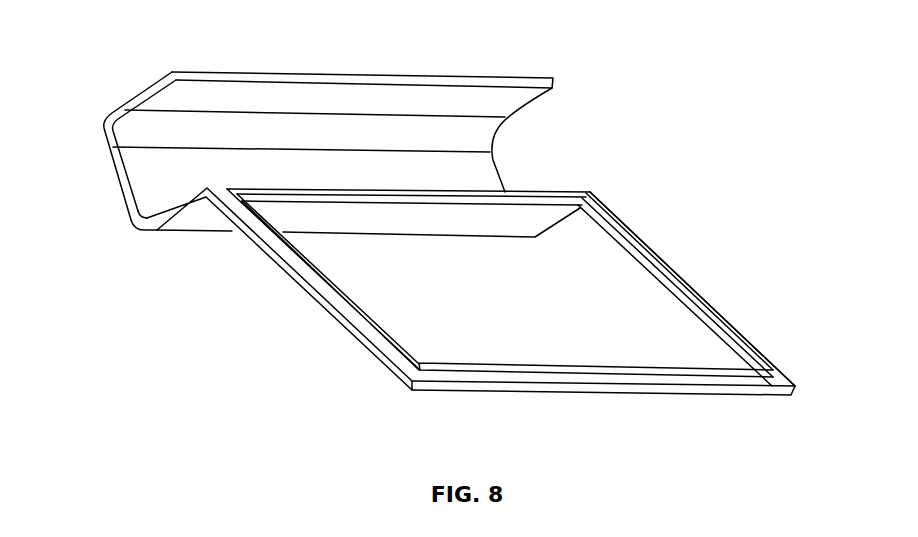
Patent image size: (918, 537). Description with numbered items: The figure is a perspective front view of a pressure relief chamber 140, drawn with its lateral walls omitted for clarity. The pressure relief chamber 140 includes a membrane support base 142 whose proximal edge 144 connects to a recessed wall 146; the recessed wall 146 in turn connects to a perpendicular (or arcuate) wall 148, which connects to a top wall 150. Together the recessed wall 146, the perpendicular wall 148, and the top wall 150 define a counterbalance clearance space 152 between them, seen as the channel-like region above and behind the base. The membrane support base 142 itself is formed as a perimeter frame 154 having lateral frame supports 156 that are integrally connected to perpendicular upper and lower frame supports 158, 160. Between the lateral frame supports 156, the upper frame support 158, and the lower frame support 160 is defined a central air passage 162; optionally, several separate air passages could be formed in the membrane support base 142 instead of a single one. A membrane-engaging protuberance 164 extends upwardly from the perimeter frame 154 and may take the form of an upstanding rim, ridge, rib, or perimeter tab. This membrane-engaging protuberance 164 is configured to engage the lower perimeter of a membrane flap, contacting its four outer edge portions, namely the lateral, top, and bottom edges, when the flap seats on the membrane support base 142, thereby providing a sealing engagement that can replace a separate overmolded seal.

The pressure relief chamber 140 is at (454, 232).
The membrane support base 142 is at (548, 301).
The proximal edge 144 is at (202, 198).
The recessed wall 146 is at (158, 232).
The perpendicular wall 148 is at (115, 178).
The top wall 150 is at (309, 201).
The counterbalance clearance space 152 is at (343, 133).
The perimeter frame 154 is at (672, 269).
The lateral frame supports 156 is at (346, 318).
The upper frame support 158 is at (548, 192).
The lower frame support 160 is at (623, 398).
The central air passage 162 is at (553, 277).
The membrane-engaging protuberance 164 is at (393, 336).